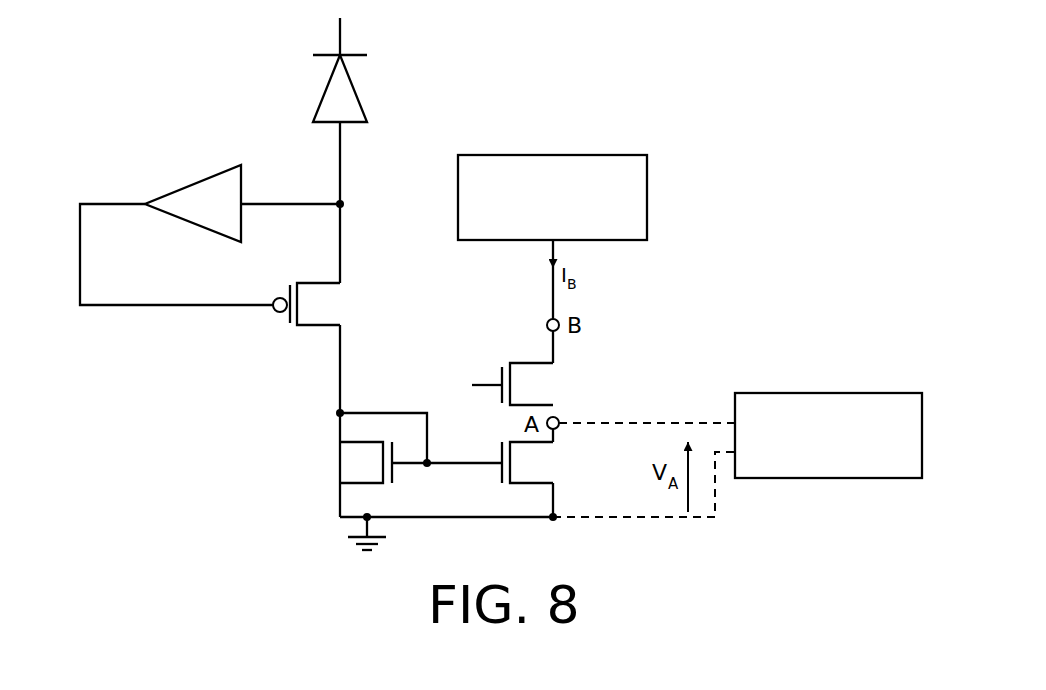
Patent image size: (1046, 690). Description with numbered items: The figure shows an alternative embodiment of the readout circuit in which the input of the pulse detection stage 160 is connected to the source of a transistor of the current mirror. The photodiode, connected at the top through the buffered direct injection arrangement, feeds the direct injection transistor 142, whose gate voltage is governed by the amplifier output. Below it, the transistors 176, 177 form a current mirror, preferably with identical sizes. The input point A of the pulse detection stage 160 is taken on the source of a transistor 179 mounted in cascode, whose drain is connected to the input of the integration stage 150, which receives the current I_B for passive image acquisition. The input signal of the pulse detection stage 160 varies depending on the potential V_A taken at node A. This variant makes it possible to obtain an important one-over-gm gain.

The direct injection transistor 142 is at (313, 297).
The integration stage 150 is at (612, 240).
The pulse detection stage 160 is at (767, 478).
The first transistor of the current mirror 176 is at (400, 474).
The second transistor of the current mirror 177 is at (531, 466).
The cascode transistor 179 is at (525, 385).